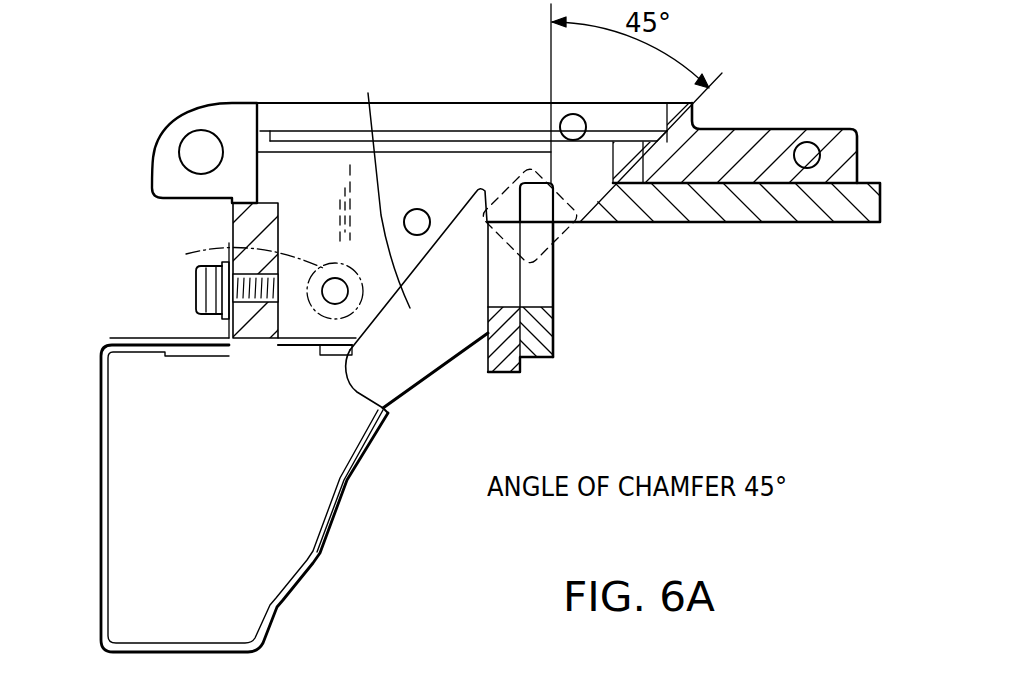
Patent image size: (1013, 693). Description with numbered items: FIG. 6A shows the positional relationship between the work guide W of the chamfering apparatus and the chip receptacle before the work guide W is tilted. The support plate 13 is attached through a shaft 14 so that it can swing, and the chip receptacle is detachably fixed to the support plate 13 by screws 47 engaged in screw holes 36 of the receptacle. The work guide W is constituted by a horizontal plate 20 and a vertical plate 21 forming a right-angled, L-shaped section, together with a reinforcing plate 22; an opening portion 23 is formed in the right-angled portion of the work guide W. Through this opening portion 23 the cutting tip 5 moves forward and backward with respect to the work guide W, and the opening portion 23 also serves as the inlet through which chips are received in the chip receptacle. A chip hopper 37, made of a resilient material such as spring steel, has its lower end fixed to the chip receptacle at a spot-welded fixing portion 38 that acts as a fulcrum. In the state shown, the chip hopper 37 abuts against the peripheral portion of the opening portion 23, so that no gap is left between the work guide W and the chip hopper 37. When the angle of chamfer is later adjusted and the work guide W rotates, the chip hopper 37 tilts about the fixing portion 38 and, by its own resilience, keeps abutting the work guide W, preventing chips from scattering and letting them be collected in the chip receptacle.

The cutting tip 5 is at (521, 168).
The support plate 13 is at (250, 222).
The shaft 14 is at (197, 148).
The horizontal plate 20 is at (683, 224).
The vertical plate 21 is at (555, 345).
The reinforcing plate 22 is at (511, 374).
The opening portion 23 is at (567, 254).
The chip cover bracket 36 is at (101, 483).
The chip hopper 37 is at (417, 237).
The fixing portion 38 is at (293, 550).
The screws 47 is at (200, 267).
The work guide W is at (771, 232).